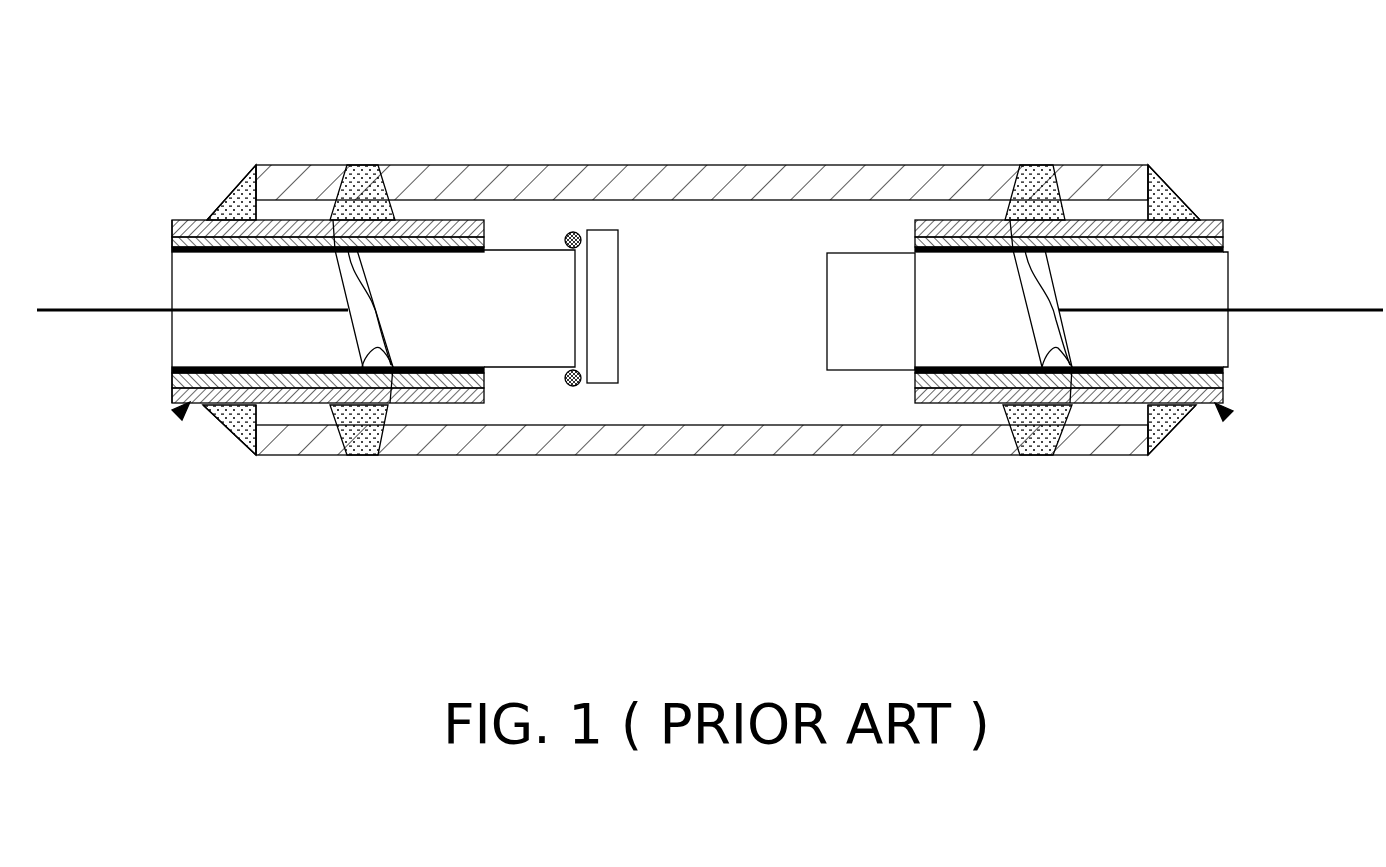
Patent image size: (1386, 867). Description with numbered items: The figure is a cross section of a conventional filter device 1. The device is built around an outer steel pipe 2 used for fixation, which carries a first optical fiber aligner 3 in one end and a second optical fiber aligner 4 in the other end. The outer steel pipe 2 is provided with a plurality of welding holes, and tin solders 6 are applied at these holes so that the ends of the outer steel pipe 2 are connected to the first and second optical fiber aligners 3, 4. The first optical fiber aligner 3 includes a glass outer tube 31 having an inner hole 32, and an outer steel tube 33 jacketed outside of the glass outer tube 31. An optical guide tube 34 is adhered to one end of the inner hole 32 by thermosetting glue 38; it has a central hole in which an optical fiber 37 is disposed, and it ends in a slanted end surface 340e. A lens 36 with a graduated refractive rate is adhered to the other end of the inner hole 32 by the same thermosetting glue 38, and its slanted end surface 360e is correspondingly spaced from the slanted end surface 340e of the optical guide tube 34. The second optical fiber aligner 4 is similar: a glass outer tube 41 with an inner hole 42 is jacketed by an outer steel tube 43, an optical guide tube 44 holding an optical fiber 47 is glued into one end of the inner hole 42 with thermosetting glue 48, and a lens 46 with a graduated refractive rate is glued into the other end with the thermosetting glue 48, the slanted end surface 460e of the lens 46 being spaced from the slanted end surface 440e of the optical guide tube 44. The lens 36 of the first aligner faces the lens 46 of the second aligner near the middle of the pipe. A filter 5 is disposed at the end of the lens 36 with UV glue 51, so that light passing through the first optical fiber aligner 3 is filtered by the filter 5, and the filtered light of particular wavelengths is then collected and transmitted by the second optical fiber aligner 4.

The filter device 1 is at (852, 53).
The outer steel pipe 2 is at (587, 167).
The first optical fiber aligner 3 is at (183, 410).
The second optical fiber aligner 4 is at (1225, 415).
The filter 5 is at (620, 258).
The tin solders 6 is at (238, 187).
The glass outer tube 31 is at (481, 400).
The inner hole 32 is at (388, 403).
The outer steel tube 33 is at (452, 403).
The optical guide tube 34 is at (188, 347).
The lens 36 is at (533, 350).
The optical fiber 37 is at (117, 308).
The thermosetting glue 38 is at (457, 222).
The glass outer tube 41 is at (932, 397).
The inner hole 42 is at (1050, 405).
The outer steel tube 43 is at (947, 397).
The optical guide tube 44 is at (1222, 343).
The lens 46 is at (857, 340).
The optical fiber 47 is at (1308, 308).
The thermosetting glue 48 is at (958, 222).
The UV glue 51 is at (581, 386).
The slanted end surface 340e is at (333, 220).
The slanted end surface 360e is at (390, 220).
The slanted end surface 460e is at (1013, 222).
The slanted end surface 440e is at (1045, 252).